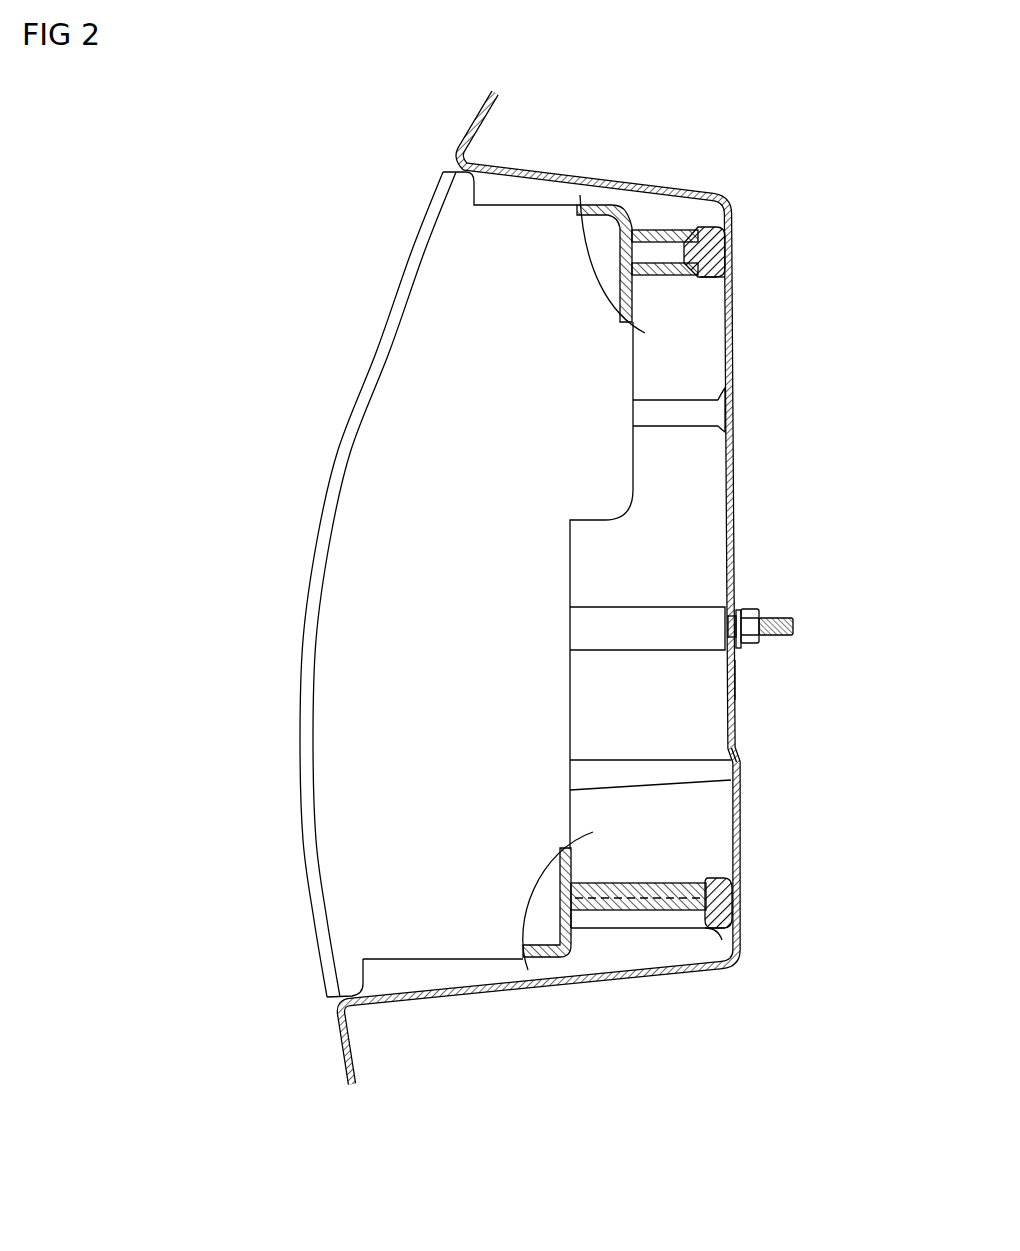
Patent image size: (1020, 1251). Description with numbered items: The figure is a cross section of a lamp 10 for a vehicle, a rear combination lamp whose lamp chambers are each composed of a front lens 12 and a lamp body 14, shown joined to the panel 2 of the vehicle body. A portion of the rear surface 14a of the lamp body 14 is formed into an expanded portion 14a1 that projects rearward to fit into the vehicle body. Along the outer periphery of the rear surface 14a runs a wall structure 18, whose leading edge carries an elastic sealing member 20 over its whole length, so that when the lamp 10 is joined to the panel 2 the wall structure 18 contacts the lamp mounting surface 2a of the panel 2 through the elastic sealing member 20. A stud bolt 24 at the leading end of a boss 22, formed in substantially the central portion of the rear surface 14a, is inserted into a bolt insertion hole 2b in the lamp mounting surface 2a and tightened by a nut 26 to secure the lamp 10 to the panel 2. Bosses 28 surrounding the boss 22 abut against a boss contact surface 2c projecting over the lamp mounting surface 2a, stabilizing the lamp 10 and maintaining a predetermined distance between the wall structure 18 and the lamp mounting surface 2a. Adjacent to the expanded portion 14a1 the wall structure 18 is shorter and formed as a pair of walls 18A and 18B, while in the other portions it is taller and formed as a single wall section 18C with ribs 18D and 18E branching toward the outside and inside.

The panel of the vehicle body 2 is at (685, 190).
The lamp mounting surface 2a is at (730, 683).
The bolt insertion hole 2b is at (778, 613).
The boss contact surface 2c is at (722, 428).
The lamp for a vehicle 10 is at (362, 233).
The front lens 12 is at (370, 333).
The lamp body 14 is at (547, 535).
The rear surface of the lamp body 14a is at (570, 592).
The expanded portion 14a1 is at (635, 492).
The wall structure 18 is at (662, 588).
The wall of the double wall section 18A is at (653, 233).
The wall of the double wall section 18B is at (653, 272).
The single wall section 18C is at (618, 907).
The rib 18D is at (648, 918).
The rib 18E is at (643, 883).
The elastic sealing member 20 is at (713, 280).
The boss 22 is at (630, 637).
The stud bolt 24 is at (797, 627).
The nut 26 is at (748, 637).
The boss 28 is at (680, 402).